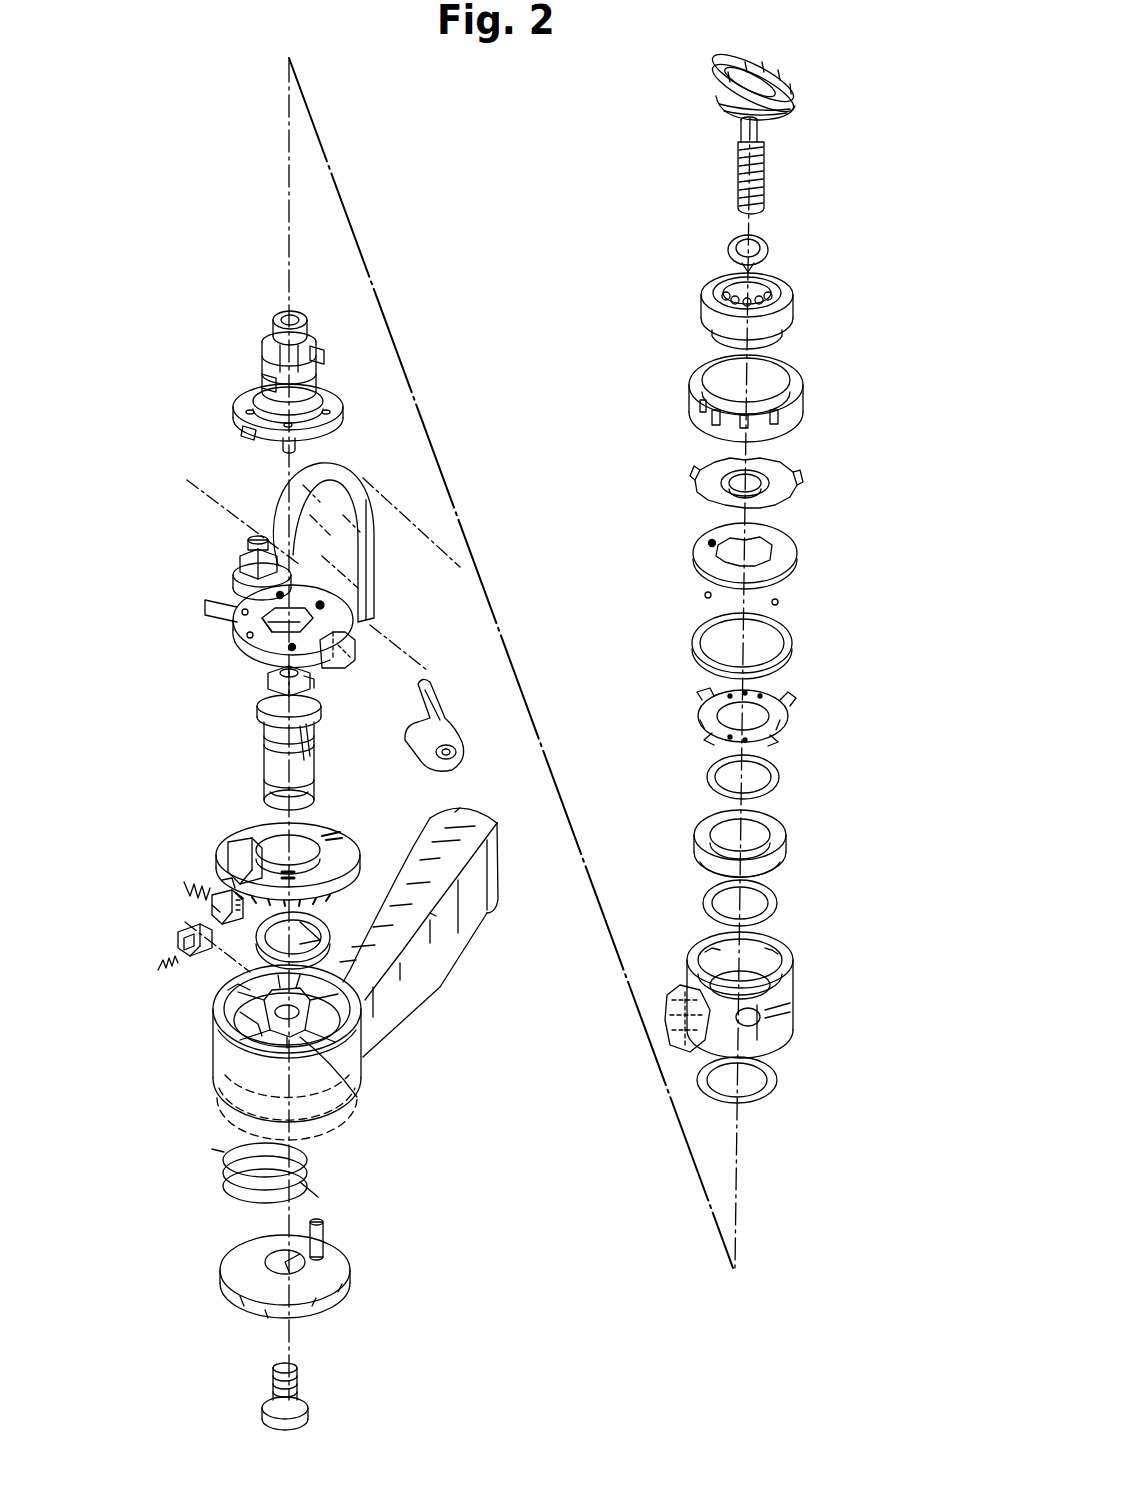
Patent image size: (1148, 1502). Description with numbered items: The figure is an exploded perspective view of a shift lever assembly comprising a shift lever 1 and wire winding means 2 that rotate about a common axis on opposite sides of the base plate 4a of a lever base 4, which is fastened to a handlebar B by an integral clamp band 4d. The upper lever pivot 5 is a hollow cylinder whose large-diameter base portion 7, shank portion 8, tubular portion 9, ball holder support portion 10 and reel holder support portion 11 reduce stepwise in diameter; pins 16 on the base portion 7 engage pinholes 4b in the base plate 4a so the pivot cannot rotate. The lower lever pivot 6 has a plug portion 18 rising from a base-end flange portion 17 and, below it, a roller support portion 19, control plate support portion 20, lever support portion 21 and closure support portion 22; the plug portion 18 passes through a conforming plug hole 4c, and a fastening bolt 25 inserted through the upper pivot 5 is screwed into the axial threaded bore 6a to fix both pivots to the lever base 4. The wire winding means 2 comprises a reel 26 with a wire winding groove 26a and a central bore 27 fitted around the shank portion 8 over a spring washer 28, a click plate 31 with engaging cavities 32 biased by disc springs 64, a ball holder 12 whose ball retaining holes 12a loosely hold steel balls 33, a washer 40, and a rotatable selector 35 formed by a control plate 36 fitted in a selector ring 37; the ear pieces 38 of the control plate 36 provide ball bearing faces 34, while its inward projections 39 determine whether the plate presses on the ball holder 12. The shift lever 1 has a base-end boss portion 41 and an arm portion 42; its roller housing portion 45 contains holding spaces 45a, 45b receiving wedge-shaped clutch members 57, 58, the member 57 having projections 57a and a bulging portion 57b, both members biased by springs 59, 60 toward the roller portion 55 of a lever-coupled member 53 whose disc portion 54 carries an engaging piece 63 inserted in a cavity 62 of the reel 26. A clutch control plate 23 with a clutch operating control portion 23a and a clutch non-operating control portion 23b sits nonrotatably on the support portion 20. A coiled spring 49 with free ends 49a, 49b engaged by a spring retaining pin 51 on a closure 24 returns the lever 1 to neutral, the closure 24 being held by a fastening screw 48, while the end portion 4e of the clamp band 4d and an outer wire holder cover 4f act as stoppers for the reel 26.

The shift lever 1 is at (448, 896).
The wire winding means 2 is at (779, 1004).
The lever base 4 is at (292, 558).
The base plate 4a is at (240, 652).
The pinholes 4b is at (228, 630).
The plug hole 4c is at (366, 578).
The clamp band 4d is at (312, 463).
The end portion 4e is at (238, 578).
The outer wire holder cover 4f is at (437, 724).
The upper lever pivot 5 is at (264, 343).
The lower lever pivot 6 is at (268, 738).
The axial threaded bore 6a is at (313, 684).
The large-diameter base portion 7 is at (237, 395).
The shank portion 8 is at (258, 390).
The tubular portion 9 is at (322, 372).
The ball holder support portion 10 is at (313, 342).
The reel holder support portion 11 is at (262, 334).
The ball holder 12 is at (794, 543).
The ball retaining holes 12a is at (797, 558).
The pins 16 is at (247, 445).
The base-end flange portion 17 is at (262, 714).
The plug portion 18 is at (263, 694).
The roller support portion 19 is at (263, 745).
The control plate support portion 20 is at (314, 740).
The lever support portion 21 is at (263, 770).
The closure support portion 22 is at (313, 802).
The clutch control plate 23 is at (463, 812).
The clutch operating control portion 23a is at (227, 988).
The clutch non-operating control portion 23b is at (430, 913).
The closure 24 is at (326, 1264).
The fastening bolt 25 is at (712, 108).
The reel 26 is at (781, 989).
The wire winding groove 26a is at (790, 1014).
The central bore 27 is at (772, 935).
The spring washer 28 is at (777, 1075).
The click plate 31 is at (783, 717).
The engaging cavities 32 is at (697, 702).
The steel balls 33 is at (778, 602).
The ball bearing faces 34 is at (713, 503).
The rotatable selector 35 is at (814, 411).
The control plate 36 is at (777, 473).
The selector ring 37 is at (807, 382).
The ear pieces 38 is at (727, 467).
The inward projections 39 is at (733, 507).
The washer 40 is at (790, 639).
The base-end boss portion 41 is at (279, 1052).
The arm portion 42 is at (430, 953).
The roller housing portion 45 is at (357, 993).
The holding space 45a is at (240, 1012).
The holding space 45b is at (357, 1097).
The fastening screw 48 is at (310, 1414).
The coiled spring 49 is at (279, 1175).
The upper free end 49a is at (318, 1196).
The lower free end 49b is at (223, 1153).
The spring retaining pin 51 is at (323, 1238).
The lever-coupled member 53 is at (262, 820).
The disc portion 54 is at (333, 822).
The roller portion 55 is at (310, 905).
The clutch member 57 is at (228, 862).
The projections 57a is at (217, 897).
The bulging portion 57b is at (210, 914).
The clutch member 58 is at (190, 929).
The spring 59 is at (193, 887).
The spring 60 is at (162, 964).
The cavity 62 is at (692, 1054).
The engaging piece 63 is at (228, 870).
The disc springs 64 is at (780, 857).
The handlebar B is at (215, 517).